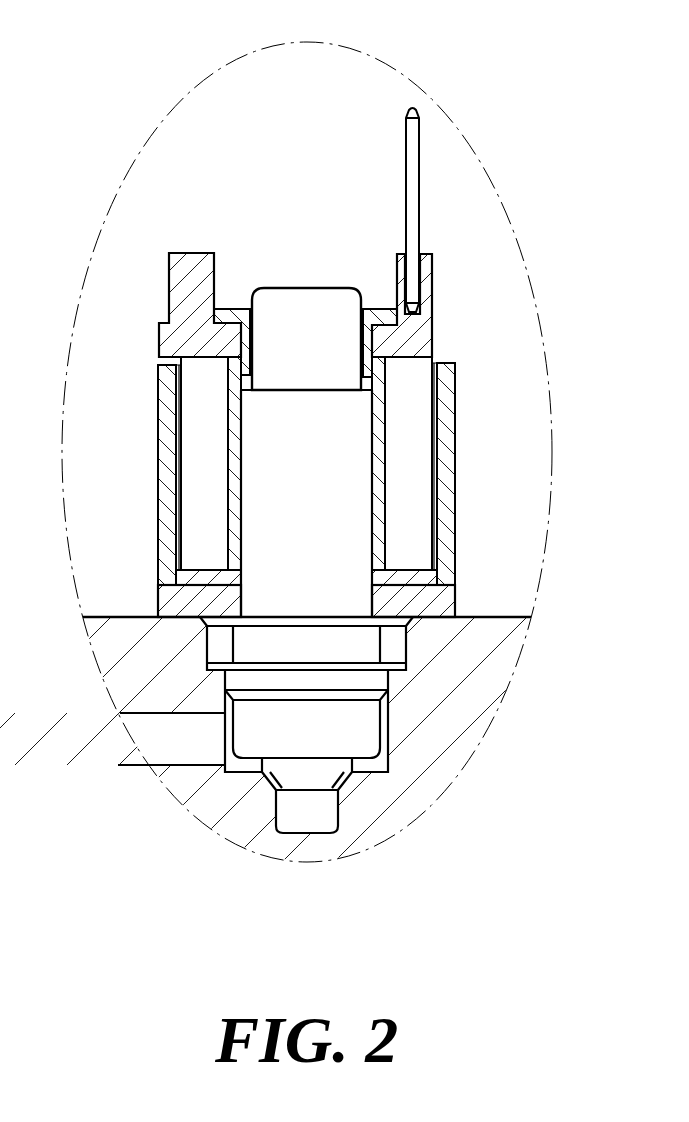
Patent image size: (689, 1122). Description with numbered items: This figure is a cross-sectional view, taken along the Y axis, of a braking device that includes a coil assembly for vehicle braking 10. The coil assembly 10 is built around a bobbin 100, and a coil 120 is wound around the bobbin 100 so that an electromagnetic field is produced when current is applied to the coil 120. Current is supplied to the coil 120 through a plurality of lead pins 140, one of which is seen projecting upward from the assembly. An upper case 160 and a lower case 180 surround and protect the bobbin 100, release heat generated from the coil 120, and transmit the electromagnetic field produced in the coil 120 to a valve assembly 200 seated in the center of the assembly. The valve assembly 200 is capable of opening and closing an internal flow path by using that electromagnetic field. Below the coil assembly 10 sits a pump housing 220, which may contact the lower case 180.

The coil assembly for vehicle braking 10 is at (86, 35).
The bobbin 100 is at (432, 333).
The coil 120 is at (433, 485).
The lead pins 140 is at (412, 162).
The upper case 160 is at (228, 310).
The lower case 180 is at (166, 486).
The valve assembly 200 is at (305, 302).
The pump housing 220 is at (488, 712).